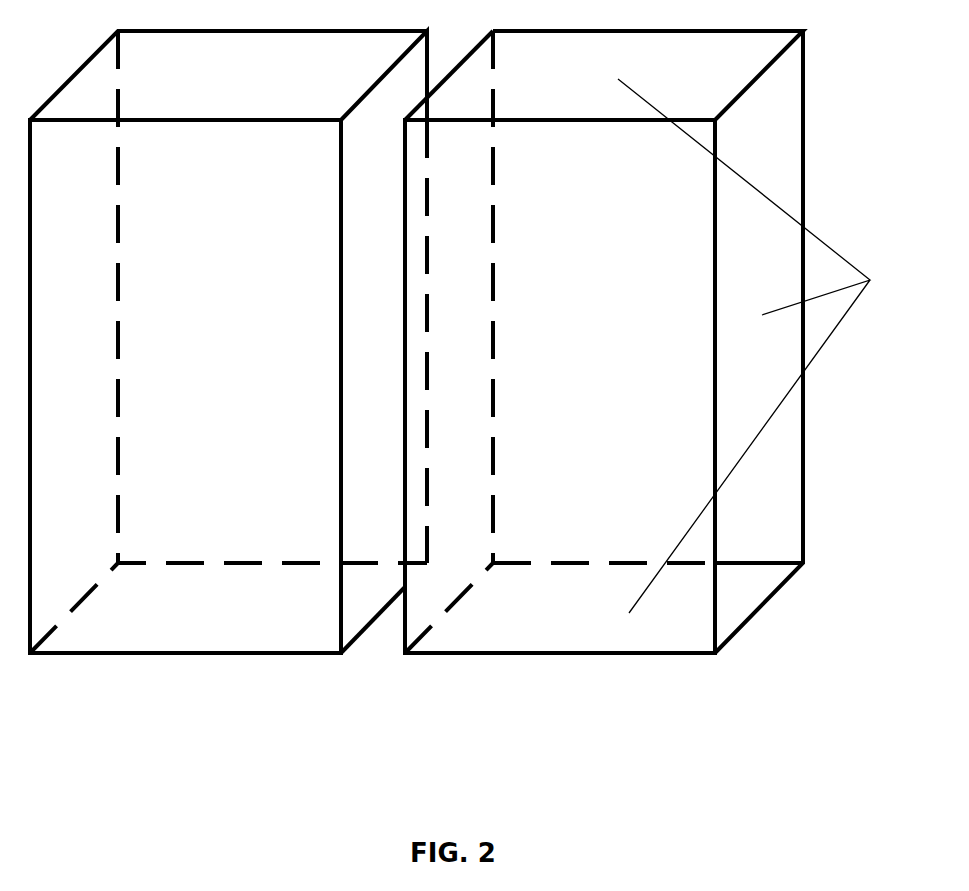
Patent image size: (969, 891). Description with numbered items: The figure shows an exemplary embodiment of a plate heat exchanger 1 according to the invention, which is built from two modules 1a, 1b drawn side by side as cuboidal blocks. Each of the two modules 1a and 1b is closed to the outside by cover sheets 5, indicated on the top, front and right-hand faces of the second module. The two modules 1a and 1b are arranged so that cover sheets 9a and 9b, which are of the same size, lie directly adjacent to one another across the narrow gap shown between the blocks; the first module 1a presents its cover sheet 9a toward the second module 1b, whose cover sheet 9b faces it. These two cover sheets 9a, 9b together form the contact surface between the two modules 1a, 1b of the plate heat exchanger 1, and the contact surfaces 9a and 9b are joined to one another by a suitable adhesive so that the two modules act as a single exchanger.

The plate heat exchanger 1 is at (463, 416).
The module 1a is at (228, 416).
The module 1b is at (604, 395).
The cover sheets 5 is at (757, 346).
The cover sheet 9a is at (386, 333).
The cover sheet 9b is at (452, 325).